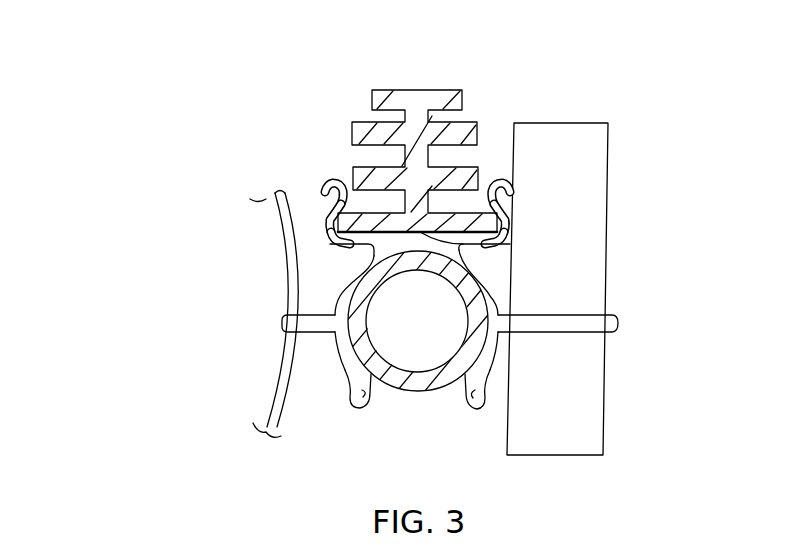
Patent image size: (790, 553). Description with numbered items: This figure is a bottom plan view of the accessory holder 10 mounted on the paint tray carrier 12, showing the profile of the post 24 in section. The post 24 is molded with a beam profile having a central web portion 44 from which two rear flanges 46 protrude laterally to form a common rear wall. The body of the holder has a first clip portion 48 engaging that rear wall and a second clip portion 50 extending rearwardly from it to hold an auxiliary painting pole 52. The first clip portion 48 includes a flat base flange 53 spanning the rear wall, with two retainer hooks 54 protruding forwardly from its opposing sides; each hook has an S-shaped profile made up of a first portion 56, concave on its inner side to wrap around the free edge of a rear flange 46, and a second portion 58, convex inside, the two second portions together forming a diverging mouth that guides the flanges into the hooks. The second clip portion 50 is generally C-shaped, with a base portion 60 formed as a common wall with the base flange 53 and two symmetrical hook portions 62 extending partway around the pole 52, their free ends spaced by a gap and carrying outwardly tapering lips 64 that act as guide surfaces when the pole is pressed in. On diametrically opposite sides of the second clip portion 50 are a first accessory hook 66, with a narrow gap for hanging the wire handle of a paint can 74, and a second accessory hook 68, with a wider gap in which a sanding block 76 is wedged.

The accessory holder 10 is at (408, 376).
The paint tray carrier 12 is at (352, 127).
The post 24 is at (390, 127).
The central web portion 44 is at (412, 151).
The rear flanges 46 is at (365, 243).
The first clip portion 48 is at (422, 198).
The second clip portion 50 is at (408, 357).
The auxiliary painting pole 52 is at (408, 384).
The base flange 53 is at (470, 266).
The retainer hooks 54 is at (298, 220).
The first portion of the hook 56 is at (340, 232).
The second portion of the hook 58 is at (325, 190).
The base portion 60 is at (410, 246).
The hook portions 62 is at (343, 300).
The lips 64 is at (363, 402).
The first accessory hook 66 is at (258, 346).
The second accessory hook 68 is at (585, 341).
The paint can 74 is at (287, 382).
The sanding block 76 is at (607, 238).